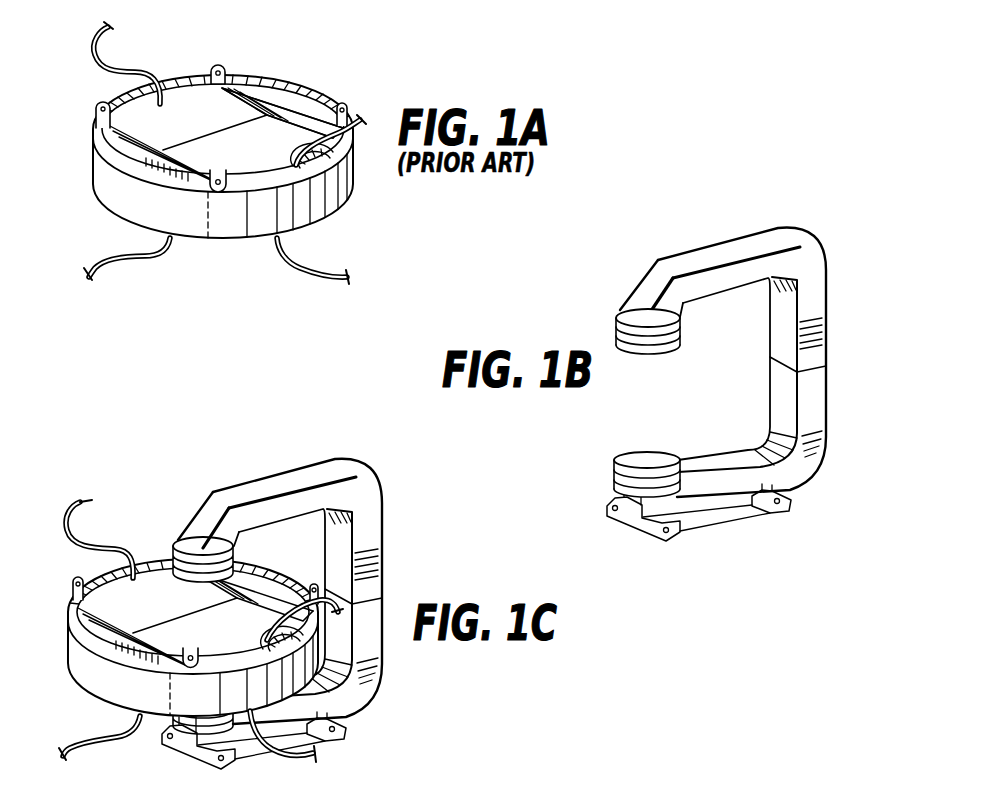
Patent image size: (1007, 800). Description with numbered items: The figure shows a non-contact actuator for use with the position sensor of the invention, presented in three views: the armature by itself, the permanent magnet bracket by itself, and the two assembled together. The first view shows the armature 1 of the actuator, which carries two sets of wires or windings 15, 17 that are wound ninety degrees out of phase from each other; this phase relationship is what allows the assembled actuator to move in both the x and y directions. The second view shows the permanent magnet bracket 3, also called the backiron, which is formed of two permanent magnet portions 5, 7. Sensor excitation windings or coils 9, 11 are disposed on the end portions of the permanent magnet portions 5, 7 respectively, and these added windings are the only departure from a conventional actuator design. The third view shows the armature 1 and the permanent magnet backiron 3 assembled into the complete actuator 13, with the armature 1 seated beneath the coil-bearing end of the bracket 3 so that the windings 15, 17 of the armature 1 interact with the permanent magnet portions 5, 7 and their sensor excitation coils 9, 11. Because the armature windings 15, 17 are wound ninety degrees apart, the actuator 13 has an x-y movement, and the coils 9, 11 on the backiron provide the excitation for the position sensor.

In FIG. 1A, the armature 1 is at (225, 148).
In FIG. 1C, the armature 1 is at (155, 558).
In FIG. 1B, the permanent magnet bracket 3 is at (826, 267).
In FIG. 1C, the permanent magnet bracket 3 is at (277, 481).
In FIG. 1B, the permanent magnet portion 5 is at (622, 312).
In FIG. 1B, the permanent magnet portion 7 is at (625, 461).
In FIG. 1B, the sensor excitation winding 9 is at (681, 336).
In FIG. 1B, the sensor excitation winding 11 is at (681, 463).
In FIG. 1C, the actuator 13 is at (220, 602).
In FIG. 1A, the windings 15 is at (273, 107).
In FIG. 1A, the windings 17 is at (258, 162).